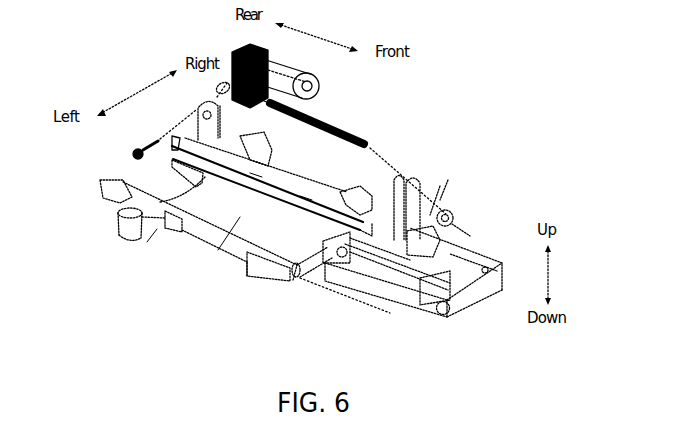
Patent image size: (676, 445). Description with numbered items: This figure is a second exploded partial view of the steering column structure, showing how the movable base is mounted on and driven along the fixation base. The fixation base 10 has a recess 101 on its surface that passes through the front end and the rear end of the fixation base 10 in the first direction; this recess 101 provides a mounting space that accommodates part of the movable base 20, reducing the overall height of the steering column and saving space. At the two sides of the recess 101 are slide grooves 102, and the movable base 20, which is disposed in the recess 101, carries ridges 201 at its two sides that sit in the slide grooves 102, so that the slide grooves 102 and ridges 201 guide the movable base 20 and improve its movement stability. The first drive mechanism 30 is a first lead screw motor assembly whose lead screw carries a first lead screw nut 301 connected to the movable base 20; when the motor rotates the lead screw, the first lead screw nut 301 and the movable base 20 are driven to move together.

The fixation base 10 is at (157, 229).
The recess 101 is at (215, 252).
The slide grooves 102 is at (290, 280).
The movable base 20 is at (467, 310).
The ridges 201 is at (412, 310).
The first drive mechanism 30 is at (333, 117).
The first lead screw nut 301 is at (453, 212).